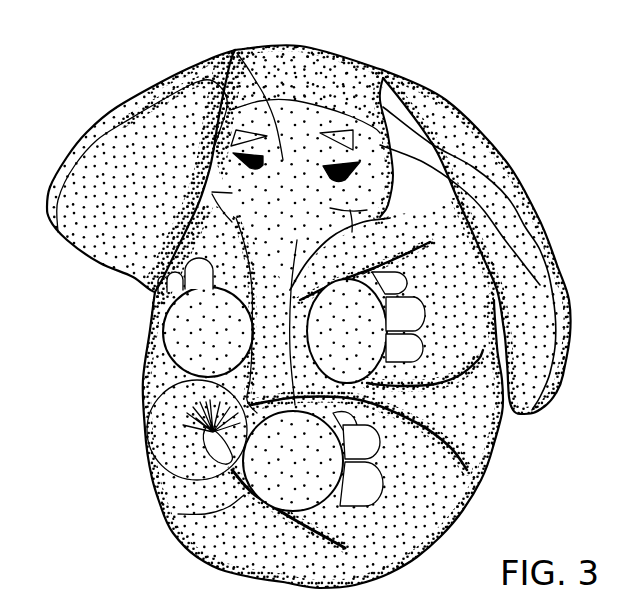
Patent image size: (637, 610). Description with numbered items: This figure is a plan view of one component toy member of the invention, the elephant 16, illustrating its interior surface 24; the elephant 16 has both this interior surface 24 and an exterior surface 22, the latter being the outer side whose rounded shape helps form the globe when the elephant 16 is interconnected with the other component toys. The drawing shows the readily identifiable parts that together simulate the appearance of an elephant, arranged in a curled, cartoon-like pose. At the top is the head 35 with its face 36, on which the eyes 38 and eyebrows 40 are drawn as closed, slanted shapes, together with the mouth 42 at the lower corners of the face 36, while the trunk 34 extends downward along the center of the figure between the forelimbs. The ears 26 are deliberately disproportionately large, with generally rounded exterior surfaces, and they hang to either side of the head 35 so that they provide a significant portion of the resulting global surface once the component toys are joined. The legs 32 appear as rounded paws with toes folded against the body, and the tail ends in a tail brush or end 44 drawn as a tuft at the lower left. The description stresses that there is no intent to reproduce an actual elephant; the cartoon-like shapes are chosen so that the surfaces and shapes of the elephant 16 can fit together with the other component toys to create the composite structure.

The elephant 16 is at (130, 364).
The exterior surface 22 is at (446, 98).
The interior surface 24 is at (308, 206).
The ears 26 is at (88, 127).
The legs 32 is at (187, 330).
The trunk 34 is at (270, 382).
The head 35 is at (302, 47).
The face 36 is at (237, 53).
The eyes 38 is at (213, 148).
The eyebrows 40 is at (316, 100).
The mouth 42 is at (390, 218).
The tail brush or end 44 is at (210, 443).